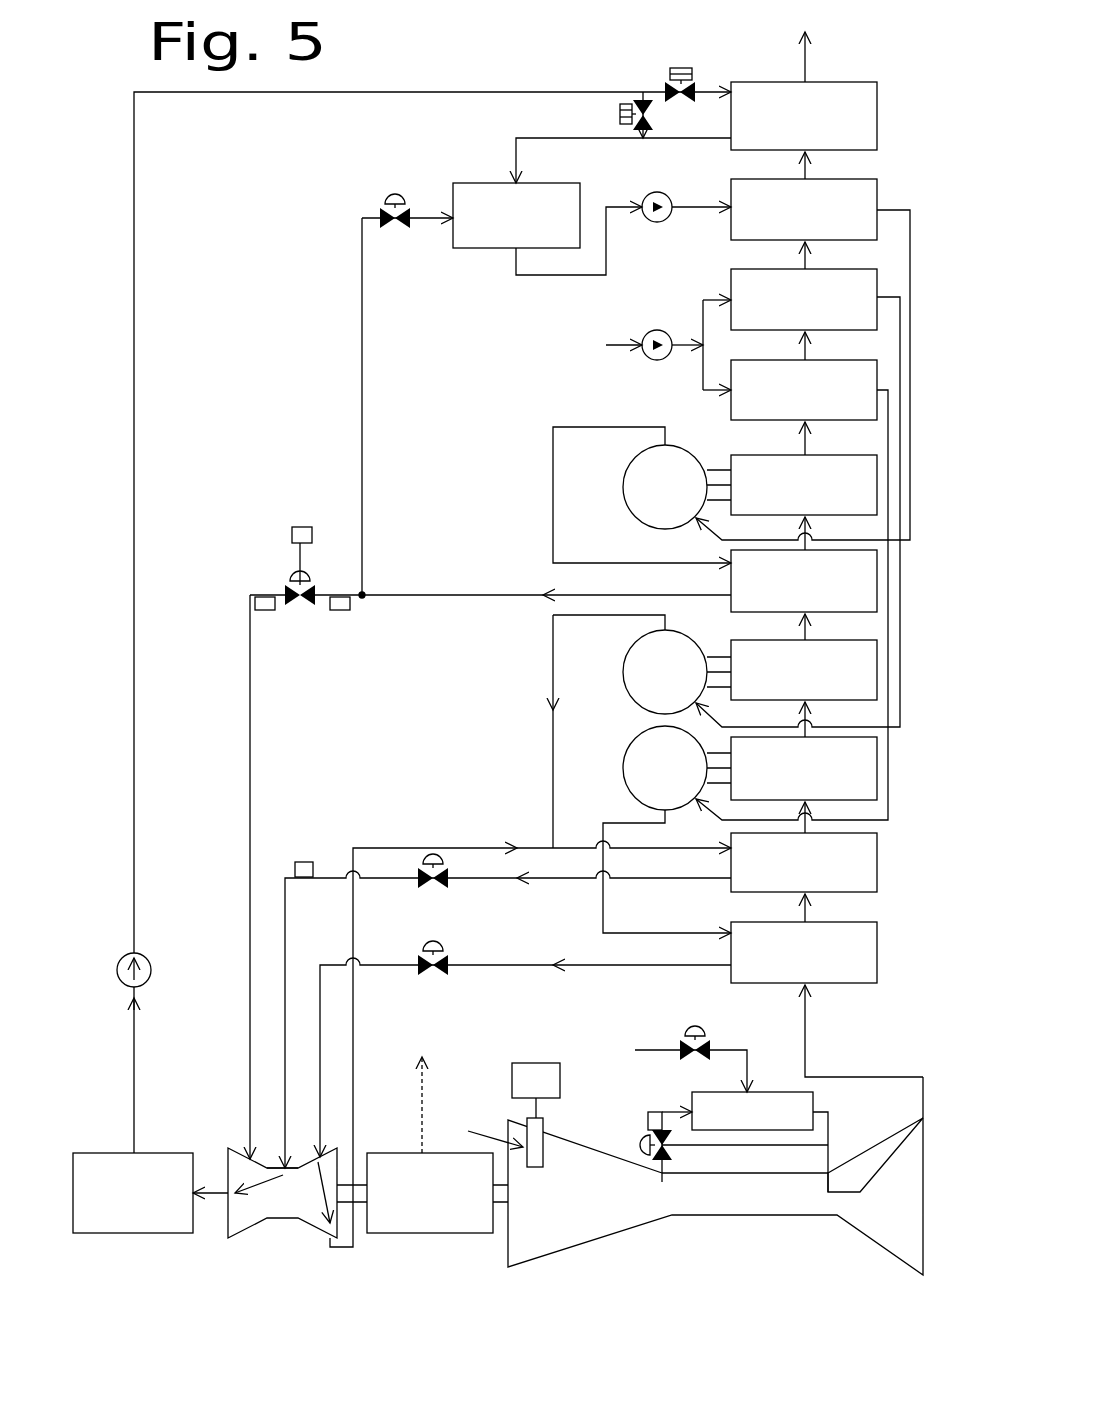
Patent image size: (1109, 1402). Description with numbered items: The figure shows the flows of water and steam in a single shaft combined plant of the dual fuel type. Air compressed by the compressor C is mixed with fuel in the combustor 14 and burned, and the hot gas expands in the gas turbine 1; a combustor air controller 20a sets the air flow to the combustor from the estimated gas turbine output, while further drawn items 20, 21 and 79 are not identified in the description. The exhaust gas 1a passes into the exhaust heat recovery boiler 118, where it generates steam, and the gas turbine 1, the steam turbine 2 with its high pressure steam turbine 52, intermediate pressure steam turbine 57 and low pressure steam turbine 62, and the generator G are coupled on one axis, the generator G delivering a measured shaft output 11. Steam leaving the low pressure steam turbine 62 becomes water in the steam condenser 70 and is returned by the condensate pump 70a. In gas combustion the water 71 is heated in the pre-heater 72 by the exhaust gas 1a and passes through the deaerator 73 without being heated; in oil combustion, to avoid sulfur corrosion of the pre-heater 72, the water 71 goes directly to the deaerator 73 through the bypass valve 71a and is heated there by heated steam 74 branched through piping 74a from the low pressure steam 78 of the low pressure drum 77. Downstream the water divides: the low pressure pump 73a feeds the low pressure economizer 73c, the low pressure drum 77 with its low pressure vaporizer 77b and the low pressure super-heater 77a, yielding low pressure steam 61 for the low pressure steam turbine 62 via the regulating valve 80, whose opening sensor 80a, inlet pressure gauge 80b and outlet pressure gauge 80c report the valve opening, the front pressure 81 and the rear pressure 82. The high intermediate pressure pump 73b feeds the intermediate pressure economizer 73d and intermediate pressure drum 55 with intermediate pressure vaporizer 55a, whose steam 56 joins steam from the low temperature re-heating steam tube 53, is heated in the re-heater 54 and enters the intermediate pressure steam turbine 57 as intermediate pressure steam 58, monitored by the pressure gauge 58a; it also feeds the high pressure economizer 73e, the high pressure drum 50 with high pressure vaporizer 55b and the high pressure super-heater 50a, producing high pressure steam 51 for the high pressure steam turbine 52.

The gas turbine 1 is at (688, 1191).
The exhaust gas 1a is at (864, 554).
The steam turbine 2 is at (228, 1160).
The shaft output 11 is at (423, 1087).
The combustor 14 is at (813, 1102).
The control valve 20 is at (665, 1152).
The combustor air controller 20a is at (648, 1118).
The inlet guide vane 21 is at (535, 1063).
The high pressure drum 50 is at (625, 758).
The high pressure super-heater 50a is at (818, 918).
The high pressure steam 51 is at (613, 967).
The high pressure steam turbine 52 is at (323, 1218).
The low temperature re-heating steam tube 53 is at (353, 985).
The re-heater 54 is at (720, 890).
The intermediate pressure drum 55 is at (625, 660).
The intermediate pressure vaporizer 55a is at (818, 640).
The high pressure vaporizer 55b is at (818, 730).
The steam 56 is at (550, 778).
The intermediate pressure steam turbine 57 is at (283, 1207).
The intermediate pressure steam 58 is at (472, 880).
The pressure gauge 58a is at (304, 862).
The low pressure steam 61 is at (407, 595).
The low pressure steam turbine 62 is at (233, 1222).
The steam condenser 70 is at (110, 1153).
The condensate pump 70a is at (150, 958).
The water 71 is at (523, 92).
The bypass valve 71a is at (620, 108).
The pre-heater 72 is at (843, 82).
The deaerator 73 is at (490, 252).
The low pressure pump 73a is at (657, 226).
The high intermediate pressure pump 73b is at (645, 358).
The low pressure economizer 73c is at (817, 178).
The intermediate pressure economizer 73d is at (817, 268).
The high pressure economizer 73e is at (817, 358).
The heated steam 74 is at (362, 443).
The piping 74a is at (362, 288).
The low pressure drum 77 is at (625, 508).
The low pressure super-heater 77a is at (818, 545).
The low pressure vaporizer 77b is at (818, 452).
The low pressure steam 78 is at (518, 595).
The LP turbine admission line 79 is at (250, 640).
The regulating valve 80 is at (293, 578).
The opening sensor 80a is at (303, 527).
The inlet pressure gauge 80b is at (340, 610).
The outlet pressure gauge 80c is at (265, 610).
The front pressure 81 is at (320, 590).
The rear pressure 82 is at (250, 683).
The exhaust heat recovery boiler 118 is at (788, 992).
The generator G is at (397, 1153).
The compressor C is at (578, 1237).